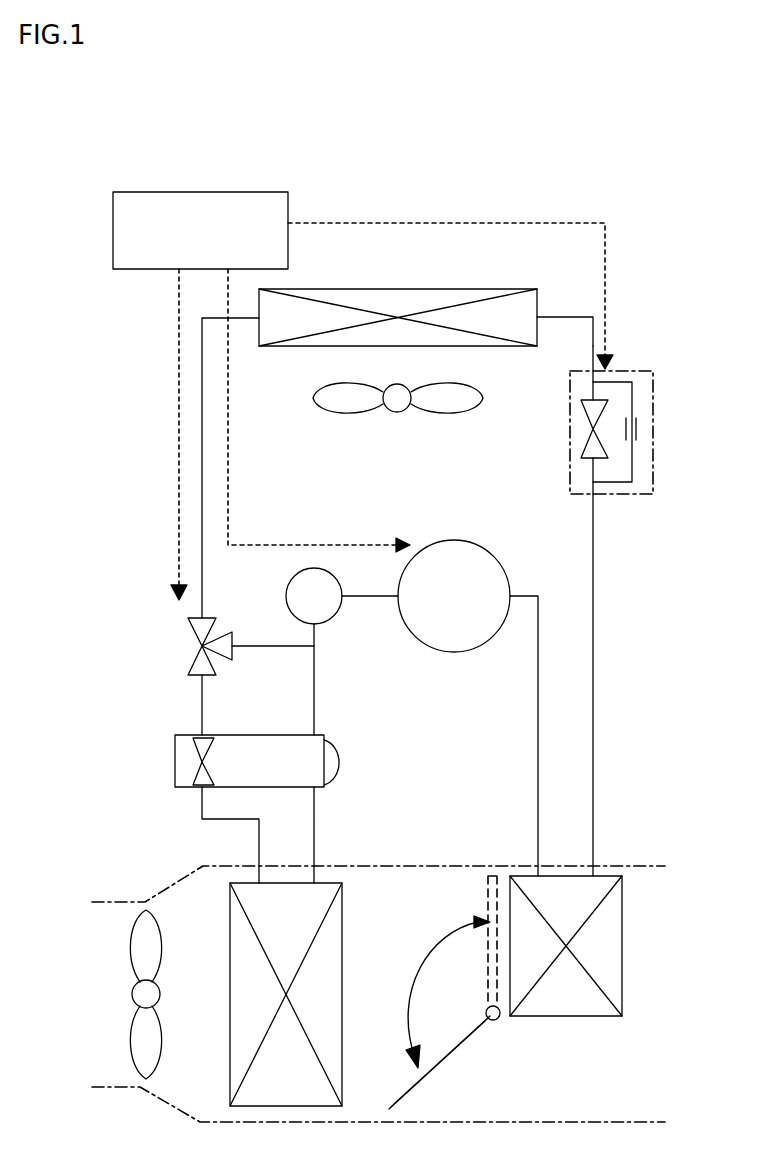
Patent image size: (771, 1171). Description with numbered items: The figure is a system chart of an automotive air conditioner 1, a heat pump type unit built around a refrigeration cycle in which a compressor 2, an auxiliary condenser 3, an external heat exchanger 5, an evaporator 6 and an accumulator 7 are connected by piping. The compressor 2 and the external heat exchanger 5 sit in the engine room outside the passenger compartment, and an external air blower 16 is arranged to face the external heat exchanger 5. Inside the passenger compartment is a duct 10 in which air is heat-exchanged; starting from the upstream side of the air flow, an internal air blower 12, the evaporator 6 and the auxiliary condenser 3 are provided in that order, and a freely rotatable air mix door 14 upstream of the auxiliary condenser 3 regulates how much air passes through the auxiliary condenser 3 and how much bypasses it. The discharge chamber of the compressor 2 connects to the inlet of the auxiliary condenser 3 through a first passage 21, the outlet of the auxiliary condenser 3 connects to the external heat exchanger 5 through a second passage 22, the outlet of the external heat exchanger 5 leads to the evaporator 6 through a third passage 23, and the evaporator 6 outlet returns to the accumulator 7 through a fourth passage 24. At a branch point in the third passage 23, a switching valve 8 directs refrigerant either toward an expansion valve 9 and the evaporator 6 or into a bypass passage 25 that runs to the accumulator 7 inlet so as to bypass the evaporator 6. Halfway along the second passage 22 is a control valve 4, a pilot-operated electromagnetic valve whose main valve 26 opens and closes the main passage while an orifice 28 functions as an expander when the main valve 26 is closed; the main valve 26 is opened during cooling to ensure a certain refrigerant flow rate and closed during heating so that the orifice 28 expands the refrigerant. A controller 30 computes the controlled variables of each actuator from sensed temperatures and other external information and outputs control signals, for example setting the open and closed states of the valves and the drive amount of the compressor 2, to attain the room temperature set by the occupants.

The automotive air conditioner 1 is at (655, 285).
The compressor 2 is at (490, 550).
The auxiliary condenser 3 is at (616, 875).
The control valve 4 is at (655, 382).
The external heat exchanger 5 is at (503, 289).
The evaporator 6 is at (330, 881).
The accumulator 7 is at (340, 578).
The switching valve 8 is at (218, 624).
The expansion valve 9 is at (175, 748).
The duct 10 is at (165, 889).
The internal air blower 12 is at (130, 948).
The air mix door 14 is at (455, 1058).
The external air blower 16 is at (330, 412).
The first passage 21 is at (540, 765).
The second passage 22 is at (595, 665).
The third passage 23 is at (205, 592).
The fourth passage 24 is at (316, 805).
The bypass passage 25 is at (300, 648).
The main valve 26 is at (582, 410).
The orifice 28 is at (637, 430).
The controller 30 is at (289, 205).